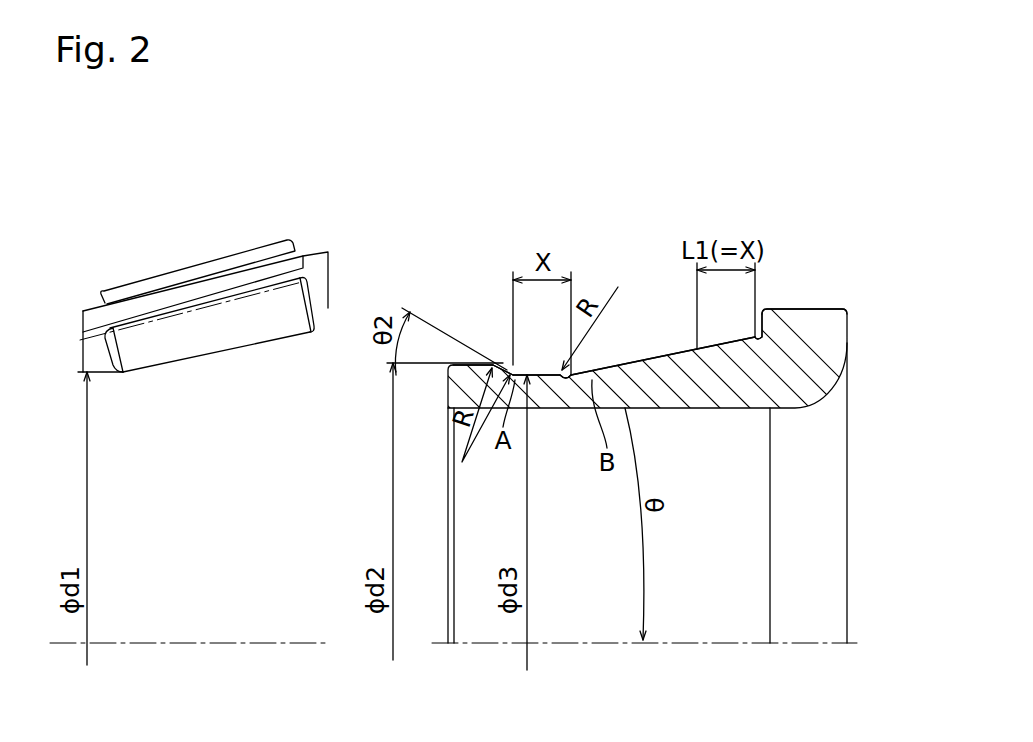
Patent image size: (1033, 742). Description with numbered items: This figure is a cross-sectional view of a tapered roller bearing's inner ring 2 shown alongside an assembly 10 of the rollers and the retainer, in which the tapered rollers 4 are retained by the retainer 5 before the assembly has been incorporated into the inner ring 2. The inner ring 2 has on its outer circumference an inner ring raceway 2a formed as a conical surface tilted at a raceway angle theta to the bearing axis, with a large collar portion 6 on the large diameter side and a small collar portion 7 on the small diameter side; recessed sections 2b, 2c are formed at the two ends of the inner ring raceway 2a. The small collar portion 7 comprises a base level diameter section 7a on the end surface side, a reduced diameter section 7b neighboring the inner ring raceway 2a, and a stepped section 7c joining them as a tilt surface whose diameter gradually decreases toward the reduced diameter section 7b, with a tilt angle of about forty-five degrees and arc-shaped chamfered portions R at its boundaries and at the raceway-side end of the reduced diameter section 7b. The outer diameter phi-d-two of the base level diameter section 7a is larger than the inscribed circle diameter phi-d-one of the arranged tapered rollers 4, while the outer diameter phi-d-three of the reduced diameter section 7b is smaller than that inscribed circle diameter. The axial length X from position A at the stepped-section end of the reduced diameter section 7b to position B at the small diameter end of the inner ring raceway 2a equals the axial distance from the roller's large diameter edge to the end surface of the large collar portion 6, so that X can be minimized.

The inner ring 2 is at (825, 390).
The inner ring raceway 2a is at (657, 357).
The recessed section 2b is at (760, 347).
The recessed section 2c is at (560, 378).
The tapered roller 4 is at (172, 282).
The retainer 5 is at (213, 283).
The large collar portion 6 is at (810, 315).
The small collar portion 7 is at (402, 213).
The base level diameter section 7a is at (465, 365).
The reduced diameter section 7b is at (533, 375).
The stepped section 7c is at (498, 372).
The assembly of the rollers and the retainer 10 is at (157, 198).